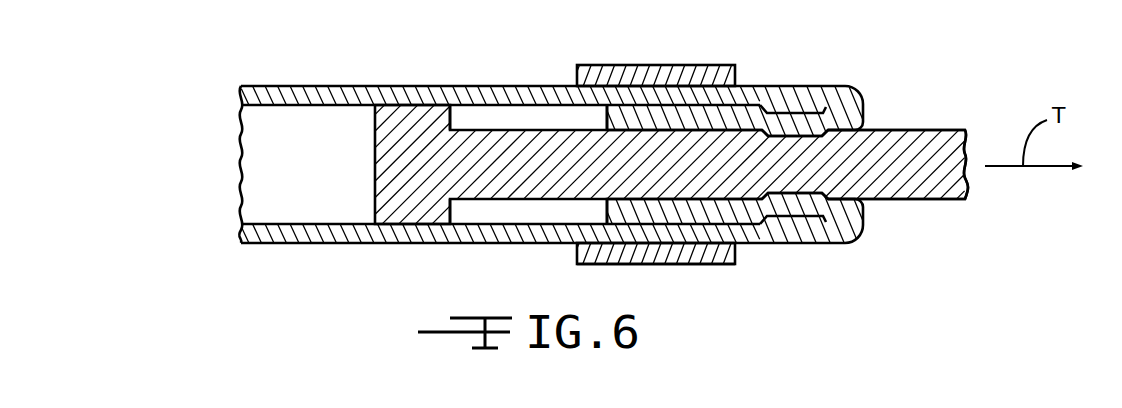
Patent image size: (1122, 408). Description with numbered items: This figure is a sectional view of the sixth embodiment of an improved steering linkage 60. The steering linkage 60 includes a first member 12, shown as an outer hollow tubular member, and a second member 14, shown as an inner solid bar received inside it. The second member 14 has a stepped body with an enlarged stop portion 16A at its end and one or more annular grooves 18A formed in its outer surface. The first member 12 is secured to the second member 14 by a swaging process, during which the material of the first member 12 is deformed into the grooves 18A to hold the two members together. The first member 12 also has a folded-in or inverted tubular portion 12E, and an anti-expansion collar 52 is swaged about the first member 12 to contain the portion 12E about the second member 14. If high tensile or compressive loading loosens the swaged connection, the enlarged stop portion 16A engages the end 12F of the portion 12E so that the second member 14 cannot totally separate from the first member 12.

The first member 12 is at (335, 76).
The enlarged stop portion 16A is at (407, 124).
The end of the portion 12E 12F is at (590, 118).
The folded-in/inverted tubular portion 12E is at (610, 211).
The anti-expansion collar 52 is at (687, 65).
The second member 14 is at (914, 120).
The annular grooves 18A is at (793, 194).
The steering linkage 60 is at (709, 282).